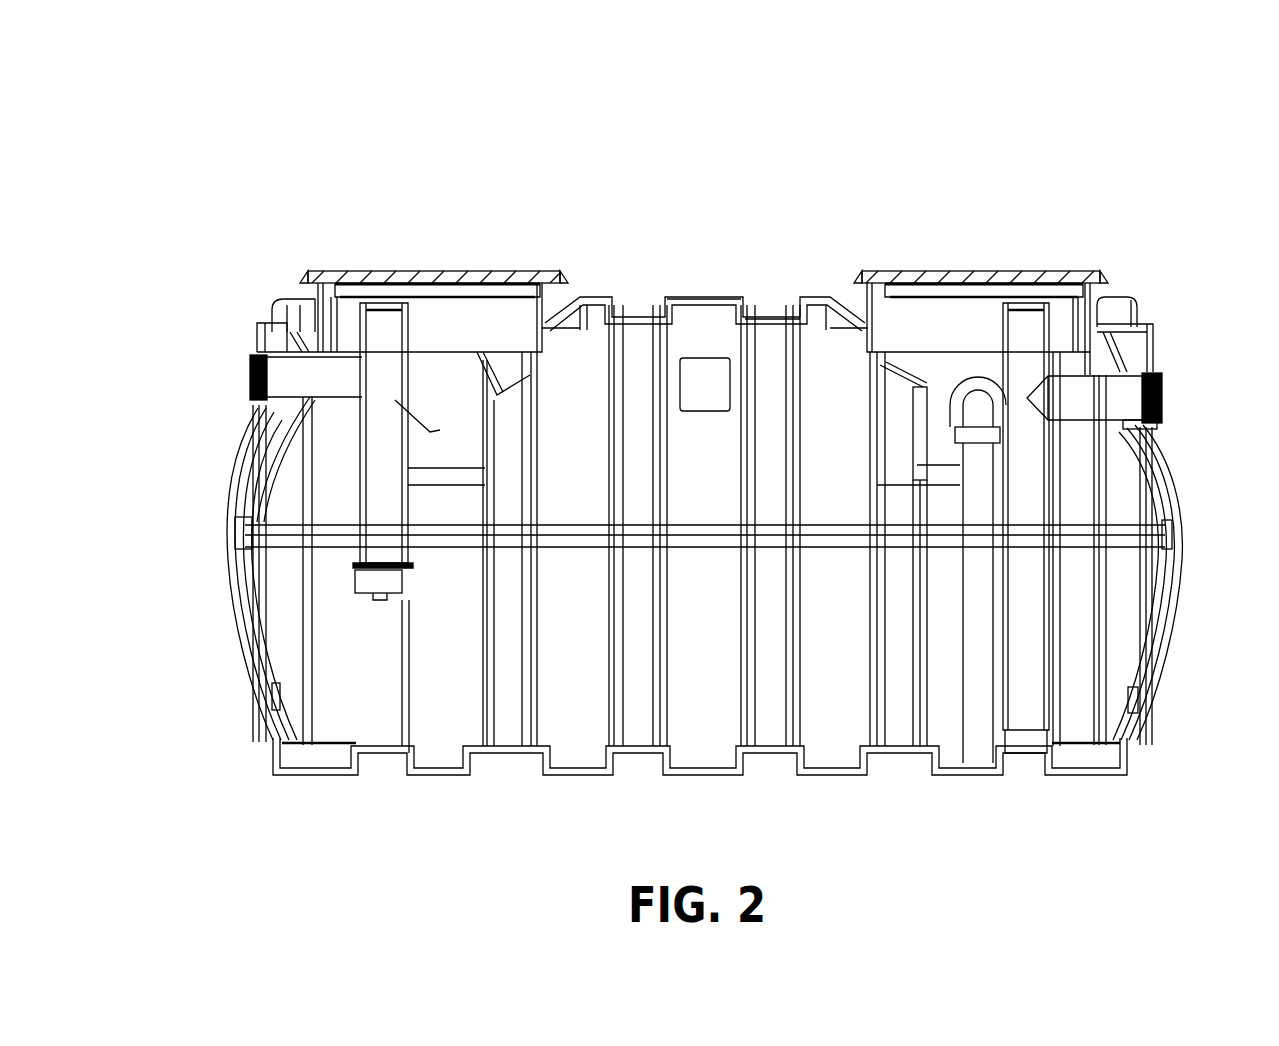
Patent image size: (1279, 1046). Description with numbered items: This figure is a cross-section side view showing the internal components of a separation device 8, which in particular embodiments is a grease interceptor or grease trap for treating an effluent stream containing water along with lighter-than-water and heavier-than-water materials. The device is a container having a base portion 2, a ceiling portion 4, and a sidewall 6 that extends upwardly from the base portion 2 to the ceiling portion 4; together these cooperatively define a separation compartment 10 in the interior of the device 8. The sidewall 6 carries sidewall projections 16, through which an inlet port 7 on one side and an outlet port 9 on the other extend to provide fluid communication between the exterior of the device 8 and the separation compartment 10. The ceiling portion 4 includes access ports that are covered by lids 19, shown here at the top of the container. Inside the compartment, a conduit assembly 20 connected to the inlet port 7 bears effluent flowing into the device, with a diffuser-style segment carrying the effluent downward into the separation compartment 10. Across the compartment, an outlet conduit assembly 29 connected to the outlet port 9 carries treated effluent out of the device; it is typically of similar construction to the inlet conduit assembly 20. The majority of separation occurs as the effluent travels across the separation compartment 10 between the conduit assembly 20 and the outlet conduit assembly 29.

The separation device 8 is at (547, 143).
The base portion 2 is at (703, 775).
The ceiling portion 4 is at (715, 297).
The sidewall 6 is at (232, 552).
The inlet port 7 is at (248, 377).
The outlet port 9 is at (1163, 400).
The separation compartment 10 is at (826, 355).
The sidewall projection 16 is at (252, 333).
The lid 19 is at (486, 270).
The conduit assembly 20 is at (352, 490).
The outlet conduit assembly 29 is at (1057, 587).